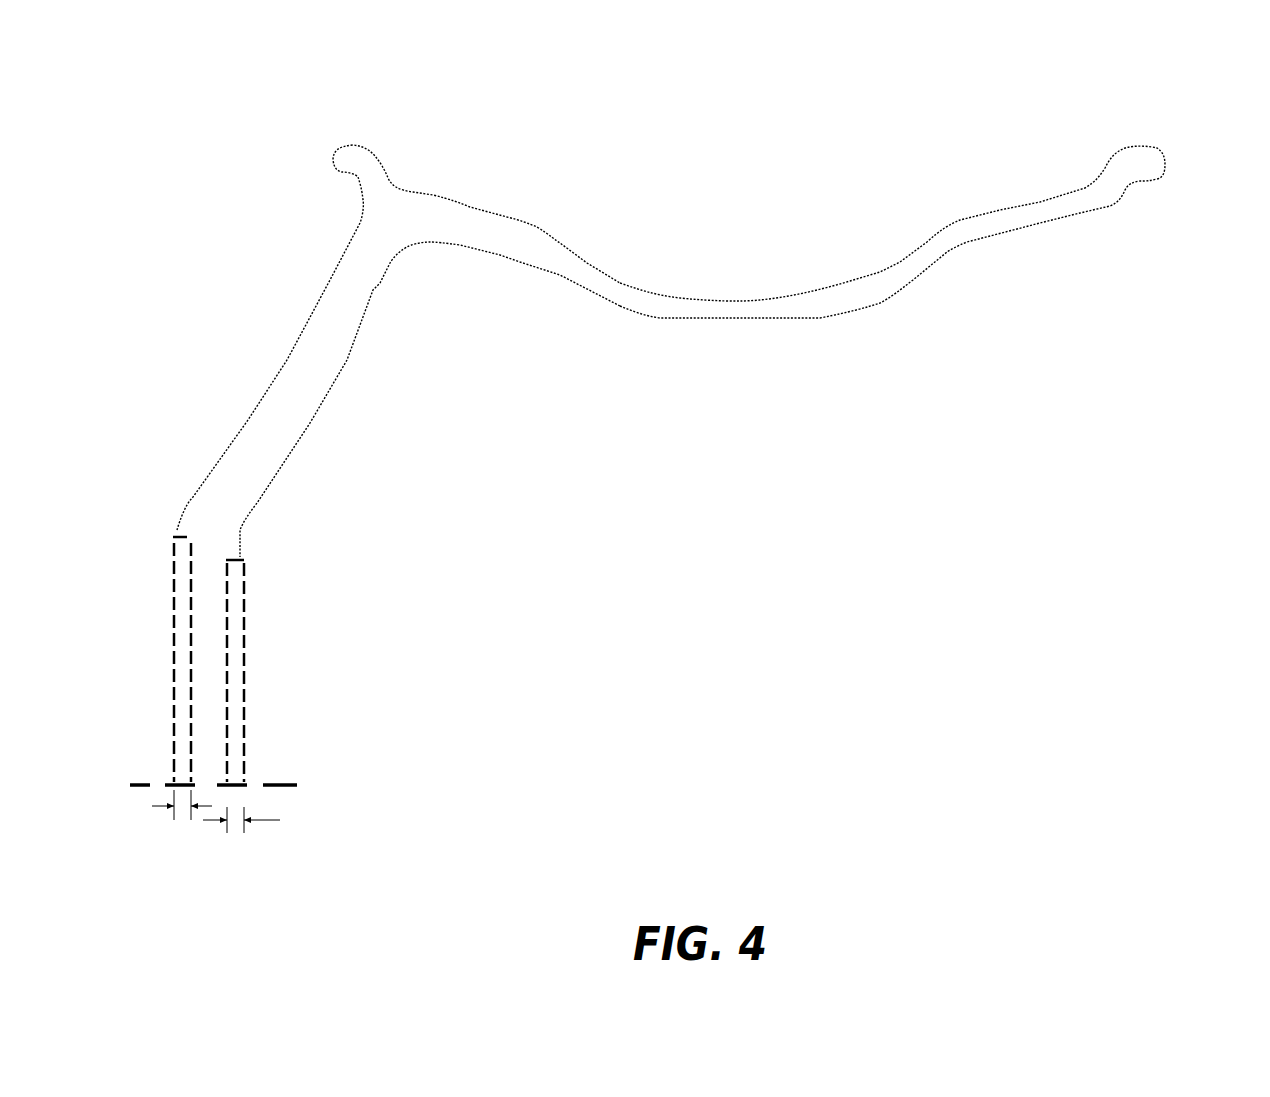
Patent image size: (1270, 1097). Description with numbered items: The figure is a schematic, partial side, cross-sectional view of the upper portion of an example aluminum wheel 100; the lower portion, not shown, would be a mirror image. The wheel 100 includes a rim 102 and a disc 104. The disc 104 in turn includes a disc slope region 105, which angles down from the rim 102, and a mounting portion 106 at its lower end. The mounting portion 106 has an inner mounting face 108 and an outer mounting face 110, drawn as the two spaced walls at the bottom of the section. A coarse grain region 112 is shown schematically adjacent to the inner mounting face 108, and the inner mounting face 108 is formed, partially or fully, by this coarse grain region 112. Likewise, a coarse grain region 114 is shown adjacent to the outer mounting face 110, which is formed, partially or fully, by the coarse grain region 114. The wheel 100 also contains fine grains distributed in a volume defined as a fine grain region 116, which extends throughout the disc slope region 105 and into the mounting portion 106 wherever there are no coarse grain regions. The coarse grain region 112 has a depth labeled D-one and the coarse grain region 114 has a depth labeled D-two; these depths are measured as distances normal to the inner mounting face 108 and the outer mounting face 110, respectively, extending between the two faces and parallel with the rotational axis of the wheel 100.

The wheel 100 is at (1192, 96).
The rim 102 is at (1043, 202).
The disc 104 is at (248, 420).
The disc slope region 105 is at (310, 423).
The mounting portion 106 is at (175, 530).
The inner mounting face 108 is at (243, 677).
The outer mounting face 110 is at (173, 633).
The coarse grain region 112 is at (233, 738).
The coarse grain region 114 is at (183, 730).
The fine grain region 116 is at (210, 557).